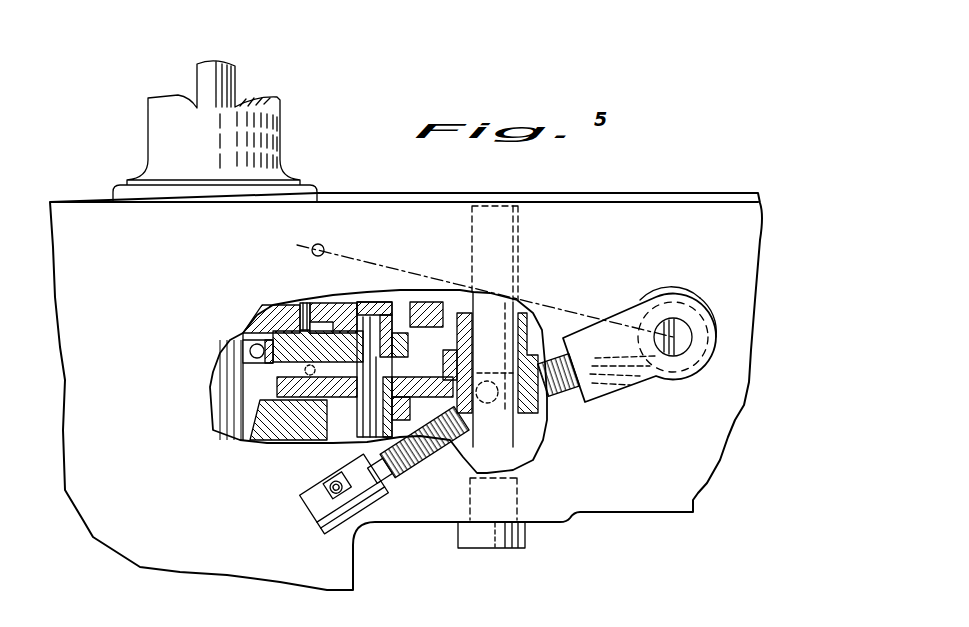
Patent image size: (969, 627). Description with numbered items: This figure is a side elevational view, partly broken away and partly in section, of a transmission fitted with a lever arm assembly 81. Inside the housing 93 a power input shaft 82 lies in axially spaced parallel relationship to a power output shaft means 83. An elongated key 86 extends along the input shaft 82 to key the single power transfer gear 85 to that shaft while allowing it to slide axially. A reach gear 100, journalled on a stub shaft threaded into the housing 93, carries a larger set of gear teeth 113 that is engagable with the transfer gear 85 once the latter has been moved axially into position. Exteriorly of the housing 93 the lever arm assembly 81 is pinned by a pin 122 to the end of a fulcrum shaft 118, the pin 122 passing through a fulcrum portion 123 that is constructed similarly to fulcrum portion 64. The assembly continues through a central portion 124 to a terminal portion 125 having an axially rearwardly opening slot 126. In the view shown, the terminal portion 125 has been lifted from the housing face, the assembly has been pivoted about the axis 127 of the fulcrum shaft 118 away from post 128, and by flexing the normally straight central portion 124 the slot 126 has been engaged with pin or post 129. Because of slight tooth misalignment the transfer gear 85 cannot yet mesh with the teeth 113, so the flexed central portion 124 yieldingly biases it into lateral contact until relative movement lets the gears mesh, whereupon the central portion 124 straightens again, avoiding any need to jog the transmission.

The power output shaft means 83 is at (246, 76).
The housing 93 is at (647, 218).
The post 128 is at (340, 226).
The power input shaft 82 is at (500, 197).
The elongated key 86 is at (516, 248).
The power transfer gear 85 is at (539, 323).
The reach gear 100 is at (337, 413).
The set of gear teeth 113 is at (423, 377).
The fulcrum portion 64 is at (615, 388).
The fulcrum shaft 118 is at (686, 320).
The fulcrum portion 123 is at (706, 356).
The pin 122 is at (683, 290).
The axis 127 is at (693, 314).
The lever arm assembly 81 is at (569, 392).
The central portion 124 is at (407, 467).
The pin or post 129 is at (318, 483).
The slot 126 is at (320, 502).
The terminal portion 125 is at (337, 513).